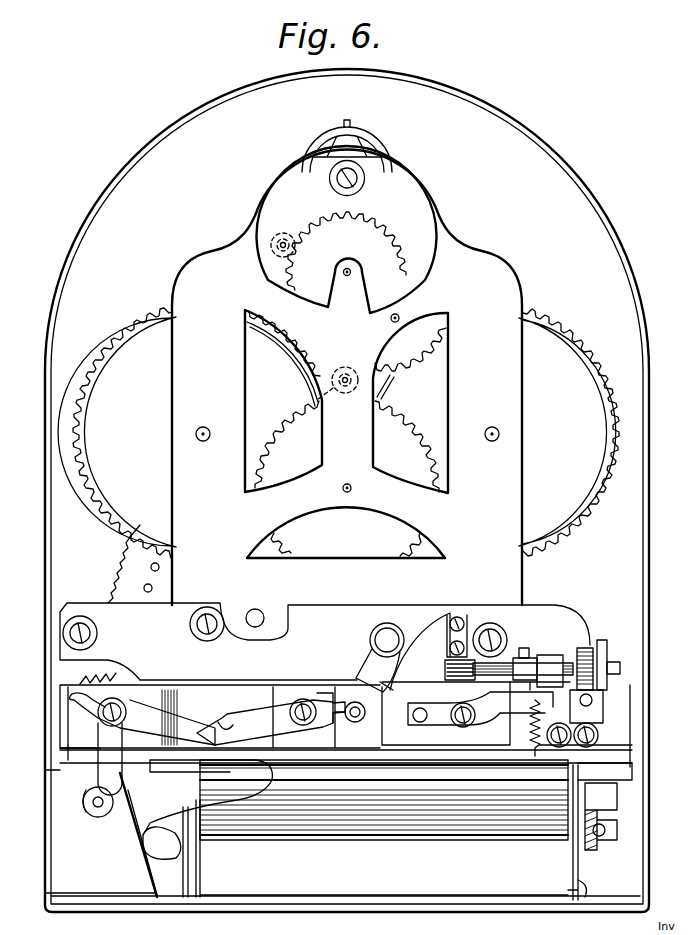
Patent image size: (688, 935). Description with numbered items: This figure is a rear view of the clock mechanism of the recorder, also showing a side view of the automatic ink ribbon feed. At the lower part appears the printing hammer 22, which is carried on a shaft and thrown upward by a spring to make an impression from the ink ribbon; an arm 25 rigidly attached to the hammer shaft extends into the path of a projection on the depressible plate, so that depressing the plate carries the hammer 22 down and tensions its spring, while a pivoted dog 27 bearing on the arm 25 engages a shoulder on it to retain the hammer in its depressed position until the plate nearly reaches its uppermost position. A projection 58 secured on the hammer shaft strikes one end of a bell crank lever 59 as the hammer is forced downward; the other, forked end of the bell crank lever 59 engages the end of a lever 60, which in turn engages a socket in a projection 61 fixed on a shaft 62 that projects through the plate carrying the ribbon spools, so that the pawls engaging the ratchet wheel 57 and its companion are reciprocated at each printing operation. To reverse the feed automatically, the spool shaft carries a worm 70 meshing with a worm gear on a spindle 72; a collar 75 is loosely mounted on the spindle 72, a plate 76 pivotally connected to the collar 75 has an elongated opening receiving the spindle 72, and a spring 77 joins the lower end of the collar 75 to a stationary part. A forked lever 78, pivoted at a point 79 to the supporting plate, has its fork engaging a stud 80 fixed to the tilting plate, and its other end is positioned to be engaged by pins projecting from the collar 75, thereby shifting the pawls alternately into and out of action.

The hammer 22 is at (207, 797).
The arm 25 is at (162, 843).
The dog 27 is at (88, 752).
The ratchet wheel 57 is at (84, 680).
The projection 58 is at (86, 790).
The bell crank lever 59 is at (132, 704).
The lever 60 is at (265, 722).
The projection 61 is at (346, 702).
The shaft 62 is at (360, 722).
The worm 70 is at (590, 700).
The spindle 72 is at (492, 668).
The collar 75 is at (553, 665).
The plate 76 is at (535, 660).
The spring 77 is at (594, 655).
The forked lever 78 is at (480, 709).
The pivot point 79 is at (508, 728).
The stud 80 is at (418, 718).